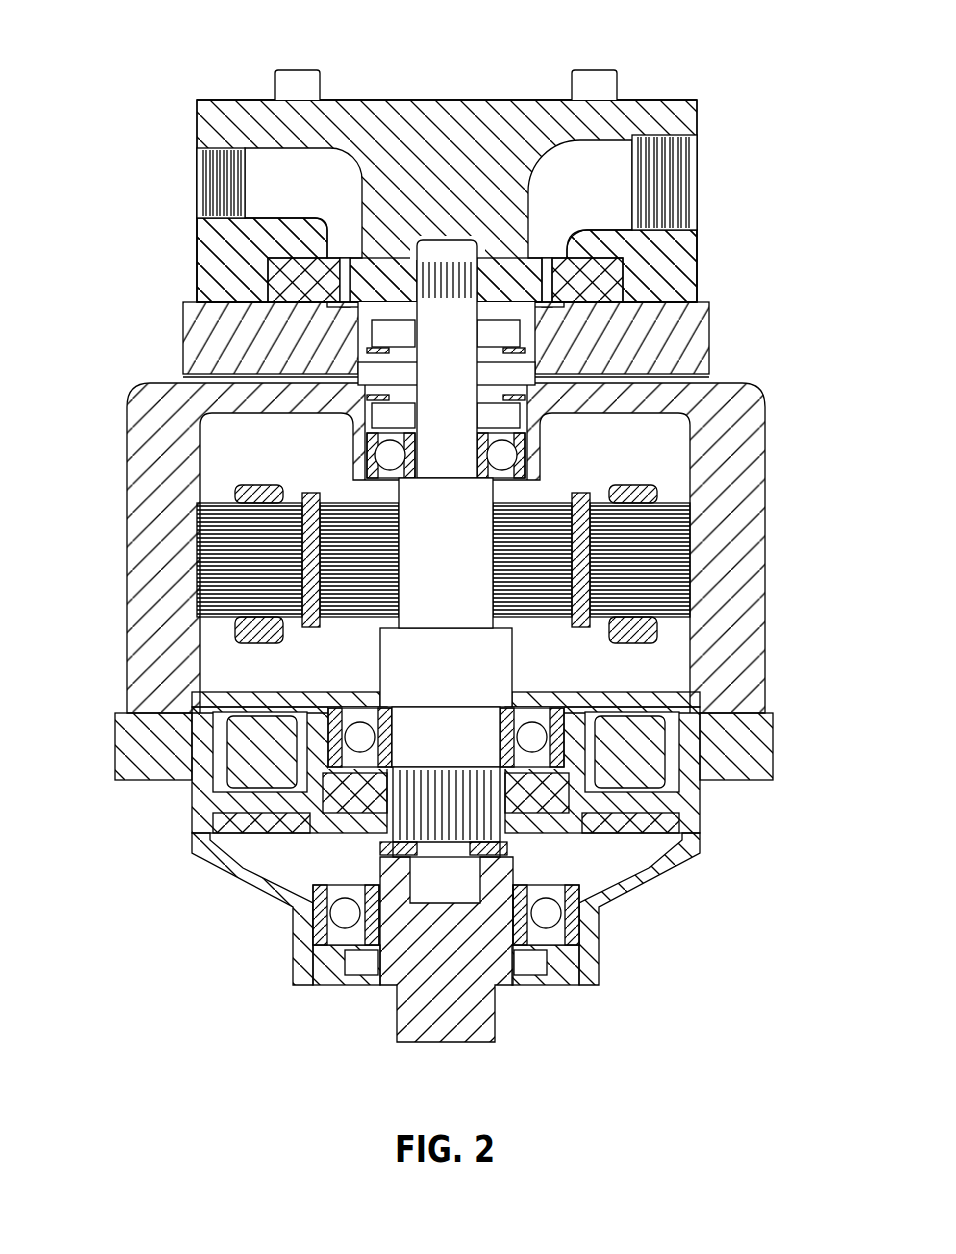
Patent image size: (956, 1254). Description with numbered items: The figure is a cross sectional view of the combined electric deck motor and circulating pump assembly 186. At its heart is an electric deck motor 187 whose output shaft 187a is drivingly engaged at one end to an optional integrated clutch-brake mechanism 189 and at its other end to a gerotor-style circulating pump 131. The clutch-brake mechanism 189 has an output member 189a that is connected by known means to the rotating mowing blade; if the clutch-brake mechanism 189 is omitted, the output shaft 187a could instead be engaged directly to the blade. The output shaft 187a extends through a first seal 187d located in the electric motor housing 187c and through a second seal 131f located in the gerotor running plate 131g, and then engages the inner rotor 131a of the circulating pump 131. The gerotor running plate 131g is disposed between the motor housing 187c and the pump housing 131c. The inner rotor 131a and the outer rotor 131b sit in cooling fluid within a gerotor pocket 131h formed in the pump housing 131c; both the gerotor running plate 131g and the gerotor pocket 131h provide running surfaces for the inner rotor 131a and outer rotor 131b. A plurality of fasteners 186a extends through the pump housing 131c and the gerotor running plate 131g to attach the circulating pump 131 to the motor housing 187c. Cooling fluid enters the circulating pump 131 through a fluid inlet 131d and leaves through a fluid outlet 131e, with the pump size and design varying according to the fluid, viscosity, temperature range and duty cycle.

The gerotor-style circulating pump 131 is at (142, 269).
The inner rotor 131a is at (517, 266).
The outer rotor 131b is at (584, 266).
The pump housing 131c is at (432, 100).
The fluid inlet 131d is at (697, 137).
The fluid outlet 131e is at (197, 152).
The second seal 131f is at (518, 340).
The gerotor running plate 131g is at (706, 327).
The gerotor pocket 131h is at (645, 271).
The combined electric deck motor and circulating pump assembly 186 is at (90, 73).
The fasteners 186a is at (295, 70).
The electric deck motor 187 is at (93, 501).
The output shaft 187a is at (470, 557).
The electric motor housing 187c is at (765, 440).
The first seal 187d is at (517, 405).
The integrated clutch-brake mechanism 189 is at (216, 887).
The output member 189a is at (492, 1020).